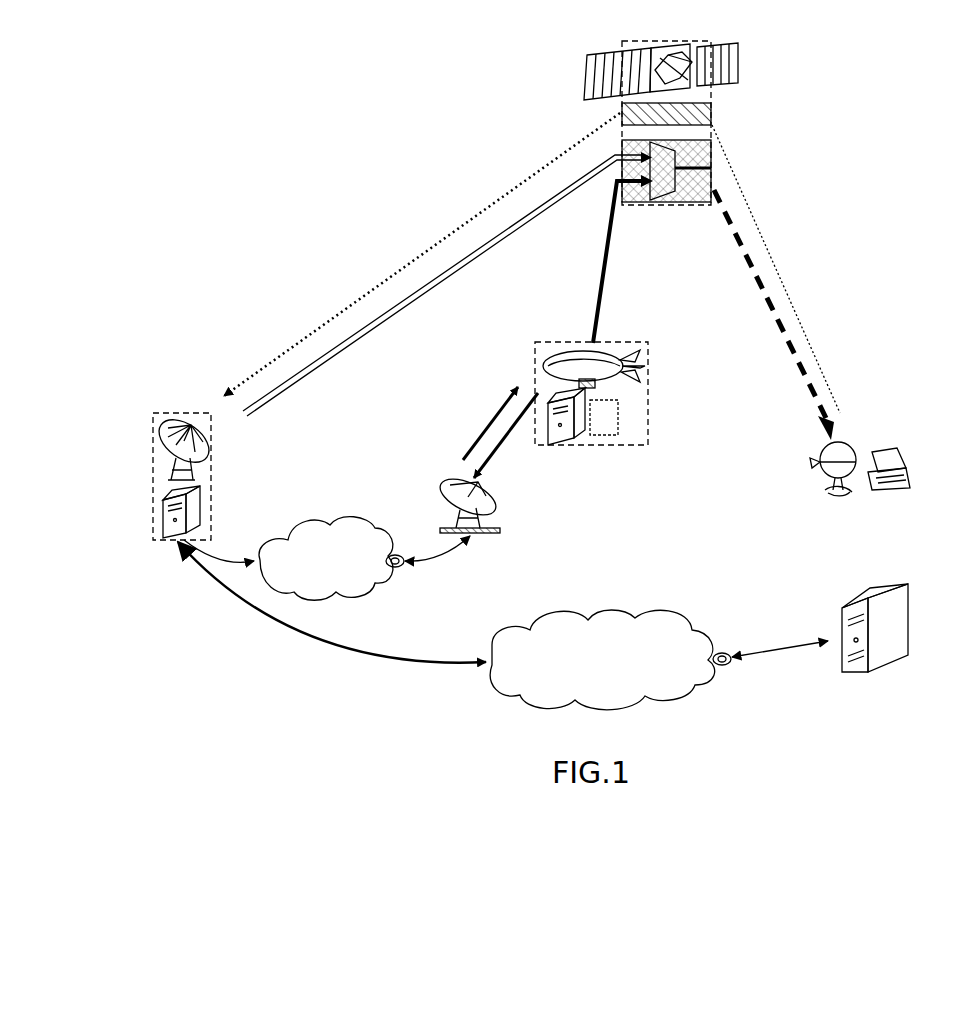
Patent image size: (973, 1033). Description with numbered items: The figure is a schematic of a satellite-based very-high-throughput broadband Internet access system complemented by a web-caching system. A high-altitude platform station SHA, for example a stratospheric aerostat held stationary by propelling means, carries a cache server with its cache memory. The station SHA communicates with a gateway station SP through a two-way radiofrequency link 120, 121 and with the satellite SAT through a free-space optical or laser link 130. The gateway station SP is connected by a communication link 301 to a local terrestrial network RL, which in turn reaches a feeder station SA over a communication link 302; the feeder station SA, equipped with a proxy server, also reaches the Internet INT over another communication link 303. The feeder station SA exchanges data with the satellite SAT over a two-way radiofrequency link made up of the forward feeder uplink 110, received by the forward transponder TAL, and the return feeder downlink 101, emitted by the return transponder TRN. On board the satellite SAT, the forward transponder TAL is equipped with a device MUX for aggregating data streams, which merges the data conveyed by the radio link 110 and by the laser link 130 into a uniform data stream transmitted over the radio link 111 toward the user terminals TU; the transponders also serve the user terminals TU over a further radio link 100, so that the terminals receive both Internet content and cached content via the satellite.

The satellite SAT is at (585, 70).
The return transponder TRN is at (712, 108).
The forward transponder TAL is at (700, 152).
The device for aggregating data streams MUX is at (665, 195).
The radio link 100 is at (755, 210).
The return feeder link 101 is at (362, 295).
The forward feeder link 110 is at (460, 268).
The laser link 130 is at (596, 295).
The radio link 111 is at (762, 290).
The high-altitude platform station SHA is at (618, 345).
The radiofrequency link 120 is at (480, 405).
The radiofrequency link 121 is at (496, 450).
The gateway station SP is at (440, 470).
The feeder station SA is at (160, 425).
The local terrestrial network RL is at (325, 520).
The communication link 302 is at (232, 550).
The communication link 301 is at (450, 556).
The communication link 303 is at (262, 624).
The Internet INT is at (583, 620).
The user terminal TU is at (852, 445).